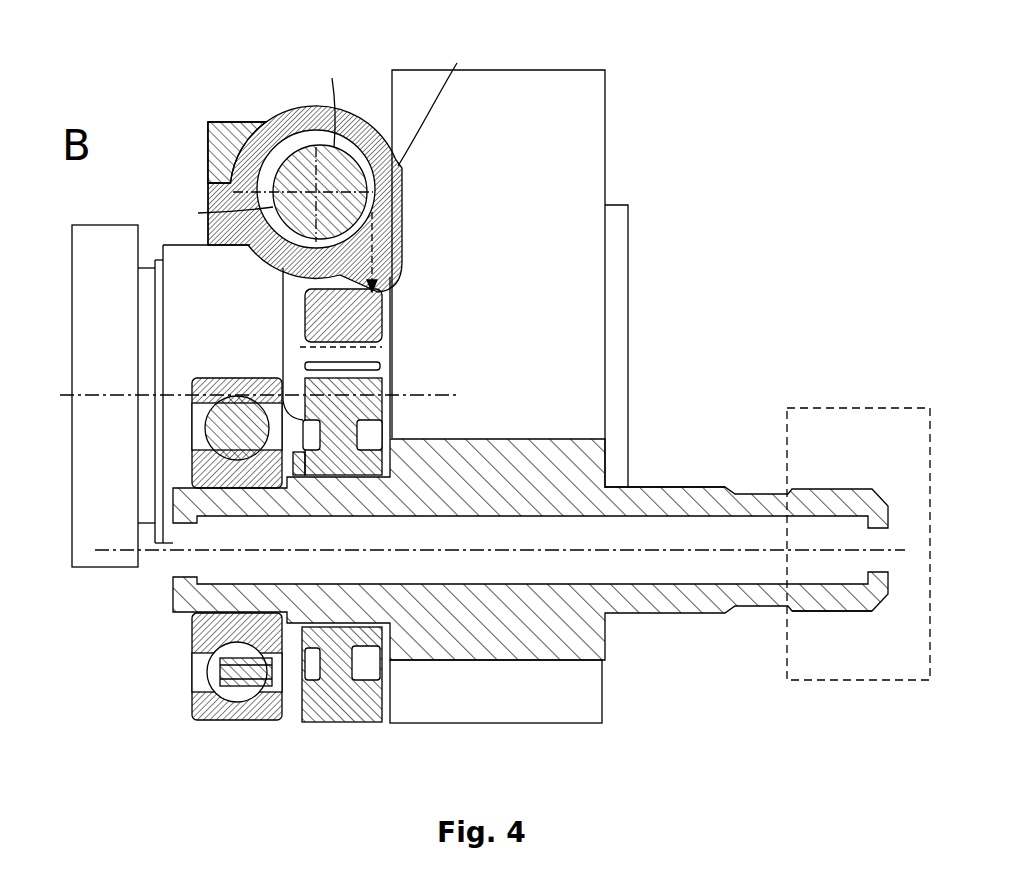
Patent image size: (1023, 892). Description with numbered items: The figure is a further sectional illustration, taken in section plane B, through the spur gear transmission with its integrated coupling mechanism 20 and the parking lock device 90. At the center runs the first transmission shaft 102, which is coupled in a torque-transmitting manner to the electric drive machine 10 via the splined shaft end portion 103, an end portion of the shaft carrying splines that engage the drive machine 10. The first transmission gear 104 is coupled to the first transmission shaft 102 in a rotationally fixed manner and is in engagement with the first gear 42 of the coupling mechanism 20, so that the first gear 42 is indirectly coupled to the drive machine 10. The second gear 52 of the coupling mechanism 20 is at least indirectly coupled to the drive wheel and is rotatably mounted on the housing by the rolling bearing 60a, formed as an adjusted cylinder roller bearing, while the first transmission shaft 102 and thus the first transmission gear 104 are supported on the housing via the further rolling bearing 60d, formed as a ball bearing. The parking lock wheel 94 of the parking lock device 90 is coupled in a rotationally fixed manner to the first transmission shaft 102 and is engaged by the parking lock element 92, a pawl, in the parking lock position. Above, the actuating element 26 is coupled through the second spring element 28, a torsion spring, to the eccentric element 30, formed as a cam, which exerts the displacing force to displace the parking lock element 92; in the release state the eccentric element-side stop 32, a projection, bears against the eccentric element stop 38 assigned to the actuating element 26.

The electric drive machine 10 is at (915, 406).
The coupling mechanism 20 is at (680, 272).
The actuating element 26 is at (297, 142).
The second spring element 28 is at (316, 119).
The eccentric element 30 is at (400, 237).
The eccentric element-side stop 32 is at (208, 190).
The eccentric element stop 38 is at (210, 138).
The first gear 42 is at (596, 72).
The second gear 52 is at (182, 435).
The rolling bearing 60a is at (85, 553).
The rolling bearing 60d is at (192, 716).
The parking lock device 90 is at (322, 736).
The parking lock element 92 is at (457, 297).
The parking lock wheel 94 is at (367, 407).
The first transmission shaft 102 is at (680, 498).
The splined shaft end portion 103 is at (833, 600).
The first transmission gear 104 is at (580, 637).